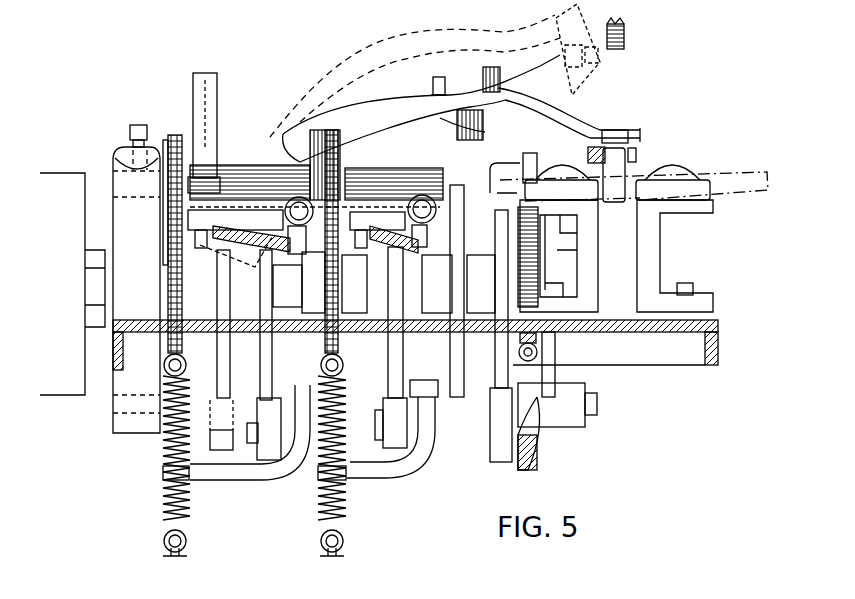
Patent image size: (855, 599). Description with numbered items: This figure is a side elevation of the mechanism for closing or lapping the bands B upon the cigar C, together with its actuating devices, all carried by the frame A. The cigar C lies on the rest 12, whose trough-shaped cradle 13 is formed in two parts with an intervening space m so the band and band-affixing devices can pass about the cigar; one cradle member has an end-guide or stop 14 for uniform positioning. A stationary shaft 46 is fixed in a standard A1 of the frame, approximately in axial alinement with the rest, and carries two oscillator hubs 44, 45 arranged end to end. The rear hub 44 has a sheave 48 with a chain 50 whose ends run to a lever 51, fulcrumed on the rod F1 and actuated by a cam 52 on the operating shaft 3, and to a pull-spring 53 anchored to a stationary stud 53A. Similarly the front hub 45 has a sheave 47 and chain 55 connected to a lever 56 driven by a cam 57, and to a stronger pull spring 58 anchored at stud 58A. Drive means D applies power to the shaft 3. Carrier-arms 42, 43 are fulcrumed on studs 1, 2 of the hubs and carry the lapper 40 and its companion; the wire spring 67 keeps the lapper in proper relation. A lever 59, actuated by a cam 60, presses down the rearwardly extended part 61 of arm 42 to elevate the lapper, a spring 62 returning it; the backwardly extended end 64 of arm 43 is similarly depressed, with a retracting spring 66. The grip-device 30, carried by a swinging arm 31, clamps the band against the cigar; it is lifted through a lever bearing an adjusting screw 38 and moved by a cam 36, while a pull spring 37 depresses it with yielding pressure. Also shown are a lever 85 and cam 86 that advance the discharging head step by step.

The drive means D is at (72, 284).
The stationary shaft 46 is at (112, 185).
The standard of the frame A1 is at (139, 217).
The wheel or sheave portion 48 is at (170, 130).
The chain 50 is at (170, 275).
The pull-spring 53 is at (163, 490).
The stationary stud 53A is at (172, 556).
The lever 59 is at (207, 92).
The rear oscillator hub 44 is at (265, 195).
The front oscillator hub 45 is at (397, 180).
The wheel or sheave 47 is at (325, 132).
The pull spring 58 is at (346, 494).
The stationary stud 58A is at (329, 556).
The stud 1 is at (299, 211).
The stud 2 is at (422, 209).
The rearwardly extended part of the lapper-carrier arm 61 is at (235, 238).
The spring 62 is at (259, 246).
The backwardly extended end of the lapper-carrier arm 64 is at (377, 230).
The retracting spring 66 is at (398, 247).
The lapper carrier-arm 42 is at (405, 127).
The adjusting screw 38 is at (436, 76).
The bands B is at (624, 34).
The swinging arm 31 is at (566, 109).
The wire spring 67 is at (590, 140).
The grip-device 30 is at (635, 160).
The lapper 40 is at (614, 175).
The cradle or seat portion 13 is at (617, 182).
The cigar C is at (634, 186).
The lapper carrier-arm 43 is at (466, 165).
The end-guide or stop 14 is at (506, 181).
The pull spring 37 is at (528, 284).
The cam 36 is at (452, 232).
The rest 12 is at (666, 238).
The intervening space m is at (612, 216).
The operating shaft 3 is at (287, 286).
The chain or connector 55 is at (313, 282).
The frame A is at (718, 336).
The cam 60 is at (228, 378).
The cam 52 is at (274, 378).
The lever 51 is at (233, 480).
The cam 57 is at (396, 372).
The lever 56 is at (408, 458).
The cam 86 is at (503, 350).
The fulcrum-rod F1 is at (598, 405).
The lever 85 is at (540, 457).